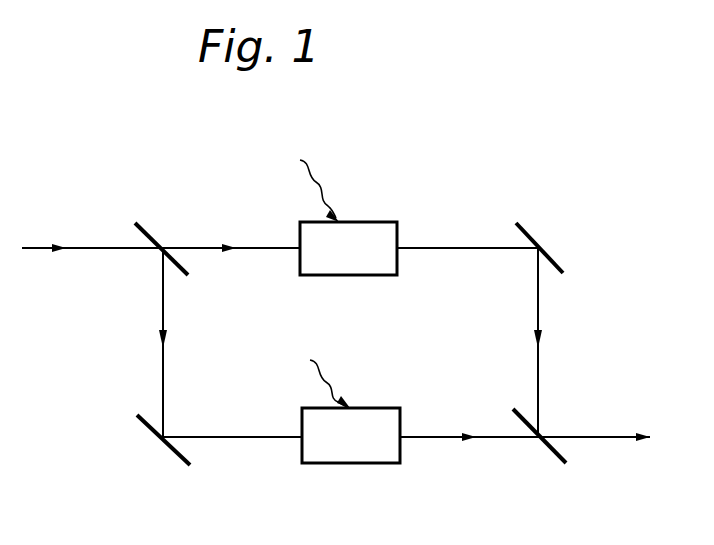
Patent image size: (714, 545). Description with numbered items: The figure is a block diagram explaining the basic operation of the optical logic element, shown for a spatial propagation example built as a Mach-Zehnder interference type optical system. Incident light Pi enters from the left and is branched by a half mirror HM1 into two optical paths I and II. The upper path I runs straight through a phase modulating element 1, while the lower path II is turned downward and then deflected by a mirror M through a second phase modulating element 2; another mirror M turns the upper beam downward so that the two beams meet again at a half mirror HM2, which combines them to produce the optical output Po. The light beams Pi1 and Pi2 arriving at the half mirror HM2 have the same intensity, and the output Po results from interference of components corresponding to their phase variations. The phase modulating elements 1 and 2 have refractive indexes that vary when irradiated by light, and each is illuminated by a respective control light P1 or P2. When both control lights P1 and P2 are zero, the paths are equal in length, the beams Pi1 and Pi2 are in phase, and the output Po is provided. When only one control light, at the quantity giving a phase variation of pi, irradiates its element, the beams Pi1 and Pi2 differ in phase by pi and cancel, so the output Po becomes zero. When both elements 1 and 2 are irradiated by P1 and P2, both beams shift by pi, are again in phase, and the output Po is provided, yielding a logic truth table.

The phase modulating element 1 is at (375, 277).
The phase modulating element 2 is at (365, 465).
The branched optical path I is at (233, 241).
The branched optical path II is at (156, 342).
The incident light Pi is at (161, 232).
The light beam Pi1 is at (513, 342).
The light beam Pi2 is at (469, 421).
The optical output Po is at (594, 421).
The control light P1 is at (306, 180).
The control light P2 is at (314, 372).
The half mirror HM1 is at (157, 234).
The half mirror HM2 is at (538, 453).
The mirror M is at (345, 339).